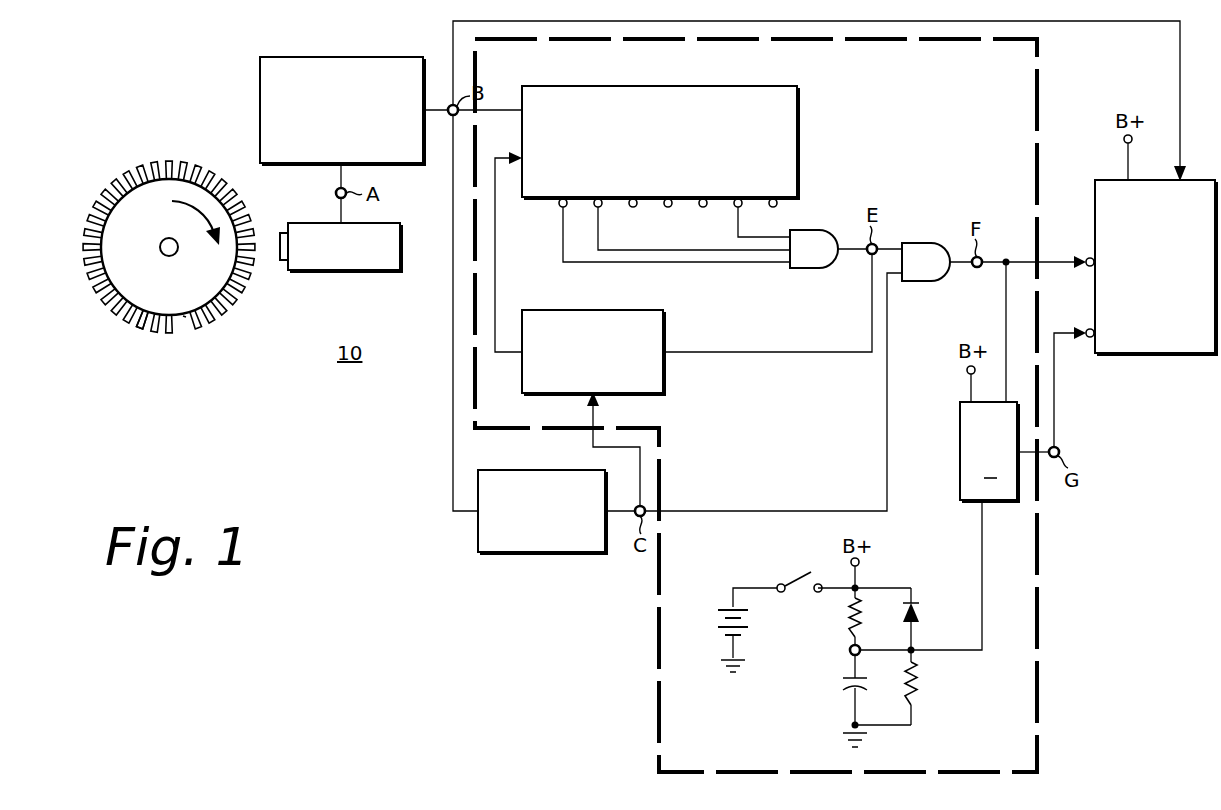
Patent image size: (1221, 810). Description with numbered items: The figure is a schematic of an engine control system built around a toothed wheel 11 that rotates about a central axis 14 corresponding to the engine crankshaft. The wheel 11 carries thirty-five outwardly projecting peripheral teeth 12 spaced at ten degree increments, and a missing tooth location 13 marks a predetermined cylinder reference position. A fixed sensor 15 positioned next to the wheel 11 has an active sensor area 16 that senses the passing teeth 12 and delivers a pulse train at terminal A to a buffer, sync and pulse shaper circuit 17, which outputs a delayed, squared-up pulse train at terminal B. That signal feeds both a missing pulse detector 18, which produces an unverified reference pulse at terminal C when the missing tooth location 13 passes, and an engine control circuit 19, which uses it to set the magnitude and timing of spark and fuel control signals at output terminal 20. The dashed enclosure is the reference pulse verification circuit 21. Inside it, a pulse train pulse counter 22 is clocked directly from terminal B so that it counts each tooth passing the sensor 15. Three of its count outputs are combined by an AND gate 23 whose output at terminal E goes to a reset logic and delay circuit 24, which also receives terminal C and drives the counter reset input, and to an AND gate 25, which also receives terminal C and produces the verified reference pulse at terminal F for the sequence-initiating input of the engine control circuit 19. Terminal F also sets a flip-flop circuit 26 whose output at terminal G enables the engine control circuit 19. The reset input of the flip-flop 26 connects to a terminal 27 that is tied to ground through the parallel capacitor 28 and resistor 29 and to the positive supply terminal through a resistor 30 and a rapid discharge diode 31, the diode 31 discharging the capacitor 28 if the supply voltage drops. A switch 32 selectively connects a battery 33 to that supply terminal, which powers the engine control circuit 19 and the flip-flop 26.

The wheel 11 is at (172, 190).
The teeth 12 is at (143, 330).
The missing tooth location 13 is at (185, 321).
The central axis 14 is at (169, 247).
The sensor 15 is at (392, 223).
The active sensor area 16 is at (281, 232).
The buffer, sync and pulse shaper circuit 17 is at (385, 57).
The missing pulse detector 18 is at (535, 470).
The engine control circuit 19 is at (1095, 197).
The output terminal 20 is at (1160, 354).
The reference pulse verification circuit 21 is at (1037, 583).
The pulse train pulse counter 22 is at (800, 128).
The AND gate 23 is at (812, 268).
The reset logic and delay circuit 24 is at (635, 310).
The AND gate 25 is at (920, 281).
The flip-flop circuit 26 is at (960, 446).
The terminal 27 is at (850, 651).
The capacitor 28 is at (843, 683).
The resistor 29 is at (919, 684).
The resistor 30 is at (848, 617).
The rapid discharge diode 31 is at (919, 614).
The switch 32 is at (812, 581).
The battery 33 is at (718, 620).